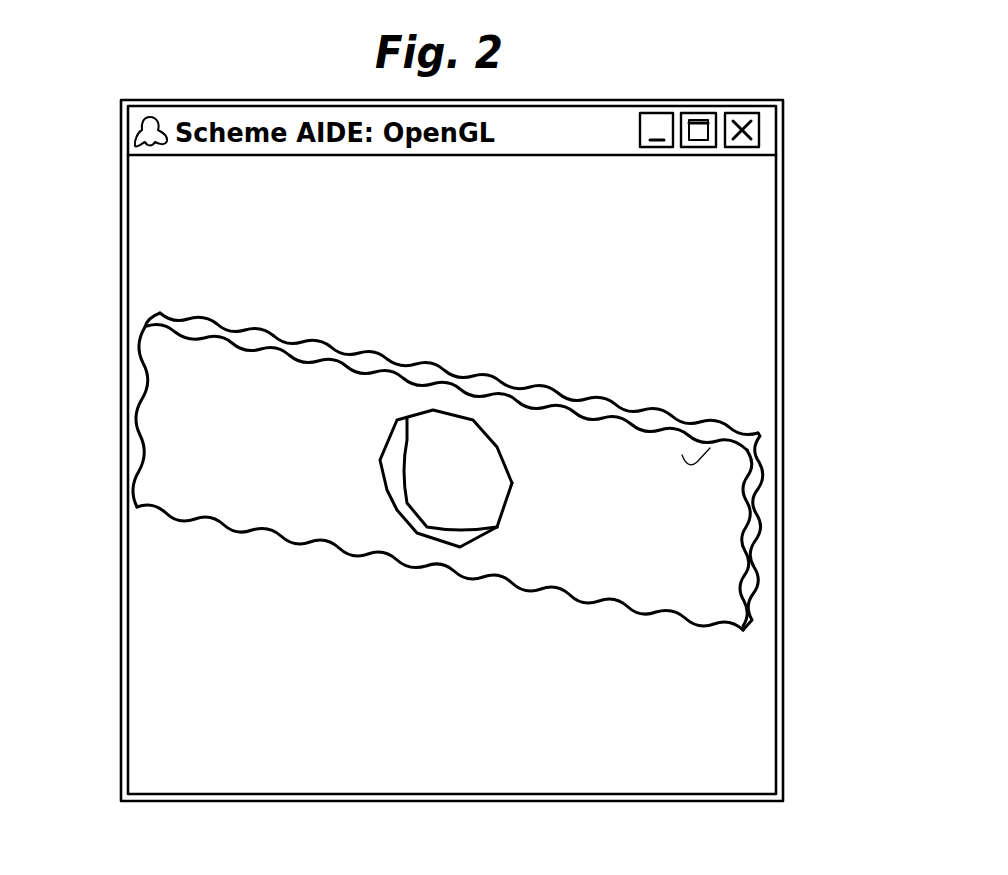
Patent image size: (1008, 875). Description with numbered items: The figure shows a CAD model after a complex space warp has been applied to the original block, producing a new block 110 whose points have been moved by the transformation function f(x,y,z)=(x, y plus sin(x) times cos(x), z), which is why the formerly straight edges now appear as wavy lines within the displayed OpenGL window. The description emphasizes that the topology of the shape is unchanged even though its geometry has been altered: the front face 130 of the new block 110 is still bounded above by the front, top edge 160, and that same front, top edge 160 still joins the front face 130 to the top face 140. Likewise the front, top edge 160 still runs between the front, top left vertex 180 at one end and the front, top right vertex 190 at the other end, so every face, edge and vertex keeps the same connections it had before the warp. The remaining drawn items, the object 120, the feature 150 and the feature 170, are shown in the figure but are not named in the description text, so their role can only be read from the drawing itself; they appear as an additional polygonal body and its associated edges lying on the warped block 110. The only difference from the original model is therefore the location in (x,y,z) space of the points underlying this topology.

The new block 110 is at (140, 373).
The octagonal object 120 is at (423, 462).
The front face 130 is at (710, 448).
The top face 140 is at (668, 428).
The side face of octagonal object 150 is at (410, 505).
The front, top edge 160 is at (217, 343).
The edge of octagonal object 170 is at (507, 507).
The front, top left vertex 180 is at (146, 326).
The front, top right vertex 190 is at (747, 447).